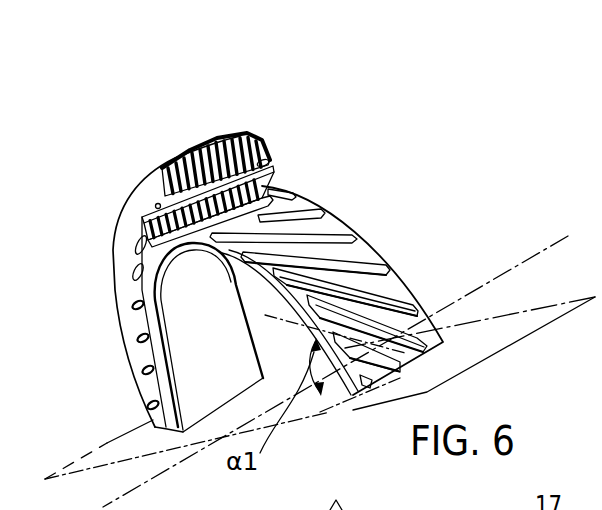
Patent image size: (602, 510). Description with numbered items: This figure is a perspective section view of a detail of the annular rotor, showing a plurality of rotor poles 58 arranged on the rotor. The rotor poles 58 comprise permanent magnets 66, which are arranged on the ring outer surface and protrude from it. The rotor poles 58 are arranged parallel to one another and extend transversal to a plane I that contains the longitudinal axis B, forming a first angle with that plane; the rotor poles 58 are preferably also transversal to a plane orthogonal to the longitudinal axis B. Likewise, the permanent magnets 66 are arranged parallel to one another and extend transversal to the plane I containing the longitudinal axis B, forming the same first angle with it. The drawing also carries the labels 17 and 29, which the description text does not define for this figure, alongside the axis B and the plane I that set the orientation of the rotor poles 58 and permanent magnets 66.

The stator vane segment 17 is at (315, 239).
The rotor poles 58 is at (377, 196).
The permanent magnets 66 is at (373, 255).
The inner shell 29 is at (236, 260).
The longitudinal axis B is at (560, 240).
The plane containing the longitudinal axis I is at (497, 342).